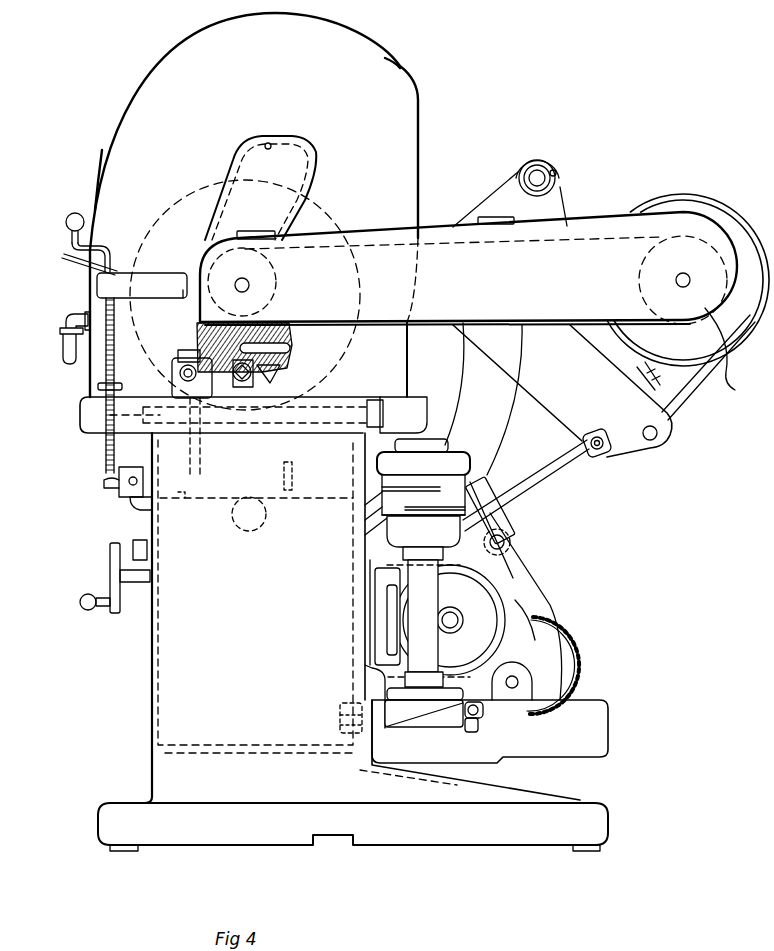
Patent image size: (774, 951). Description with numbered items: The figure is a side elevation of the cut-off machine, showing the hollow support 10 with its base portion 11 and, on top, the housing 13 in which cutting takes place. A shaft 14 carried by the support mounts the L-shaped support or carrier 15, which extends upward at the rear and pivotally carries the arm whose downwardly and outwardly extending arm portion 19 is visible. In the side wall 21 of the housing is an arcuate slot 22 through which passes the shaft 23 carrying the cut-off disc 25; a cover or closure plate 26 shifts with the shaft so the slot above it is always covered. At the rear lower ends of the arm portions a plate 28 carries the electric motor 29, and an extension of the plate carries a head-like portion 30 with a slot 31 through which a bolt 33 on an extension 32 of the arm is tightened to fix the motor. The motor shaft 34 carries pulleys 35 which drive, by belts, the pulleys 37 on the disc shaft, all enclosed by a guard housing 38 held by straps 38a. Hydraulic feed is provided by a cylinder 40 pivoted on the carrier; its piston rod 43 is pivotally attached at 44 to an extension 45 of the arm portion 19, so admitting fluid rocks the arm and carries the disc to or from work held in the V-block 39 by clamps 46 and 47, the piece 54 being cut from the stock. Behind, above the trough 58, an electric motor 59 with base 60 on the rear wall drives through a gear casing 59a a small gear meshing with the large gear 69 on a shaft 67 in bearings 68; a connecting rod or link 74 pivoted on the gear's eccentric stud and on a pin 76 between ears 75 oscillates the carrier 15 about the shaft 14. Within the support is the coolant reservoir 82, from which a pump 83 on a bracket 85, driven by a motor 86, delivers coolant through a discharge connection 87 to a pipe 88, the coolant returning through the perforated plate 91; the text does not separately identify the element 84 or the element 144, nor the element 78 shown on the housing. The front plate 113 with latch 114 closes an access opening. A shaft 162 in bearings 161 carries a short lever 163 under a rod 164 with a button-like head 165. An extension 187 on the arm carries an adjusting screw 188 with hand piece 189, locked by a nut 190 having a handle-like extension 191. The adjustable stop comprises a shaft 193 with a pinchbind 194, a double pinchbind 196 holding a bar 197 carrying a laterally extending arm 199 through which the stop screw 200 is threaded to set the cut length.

The hollow support 10 is at (124, 736).
The base portion 11 is at (415, 400).
The housing 13 is at (437, 97).
The shaft 14 is at (252, 530).
The support or carrier 15 is at (488, 418).
The arm portion 19 is at (608, 404).
The side wall 21 is at (392, 62).
The arcuate slot 22 is at (270, 143).
The shaft 23 is at (250, 286).
The cut-off disc 25 is at (172, 196).
The cover or closure plate 26 is at (313, 155).
The plate 28 is at (603, 348).
The electric motor 29 is at (690, 198).
The head-like portion 30 is at (555, 160).
The slot 31 is at (558, 172).
The extension 32 is at (478, 207).
The bolt 33 is at (534, 165).
The shaft 34 is at (692, 258).
The pulleys 35 is at (726, 350).
The pulleys 37 is at (272, 270).
The guard housing 38 is at (601, 214).
The straps 38a is at (248, 231).
The V-block 39 is at (262, 385).
The cylinder 40 is at (378, 552).
The piston rod 43 is at (553, 474).
The pivotal attachment 44 is at (606, 458).
The extension 45 is at (567, 428).
The clamp 46 is at (284, 470).
The clamp 47 is at (188, 492).
The piece 54 is at (245, 392).
The trough 58 is at (600, 742).
The electric motor 59 is at (495, 602).
The gear casing 59a is at (520, 620).
The base 60 is at (378, 610).
The shaft 67 is at (518, 682).
The bearings 68 is at (522, 692).
The gear 69 is at (562, 650).
The connecting rod or link 74 is at (522, 572).
The ears 75 is at (492, 528).
The pin 76 is at (504, 542).
The hood wall 78 is at (118, 122).
The column 82 is at (160, 662).
The pump 83 is at (442, 718).
The bracket 84 is at (340, 718).
The bracket 85 is at (372, 688).
The motor 86 is at (395, 520).
The discharge connection 87 is at (478, 722).
The pipe 88 is at (62, 350).
The perforated plate 91 is at (325, 505).
The plate 113 is at (150, 632).
The latch 114 is at (118, 542).
The handle 144 is at (112, 566).
The bearings 161 is at (128, 506).
The shaft 162 is at (120, 490).
The short lever 163 is at (118, 476).
The rod 164 is at (96, 386).
The button-like head 165 is at (180, 372).
The extension 187 is at (183, 296).
The screw 188 is at (114, 326).
The hand piece 189 is at (80, 212).
The nut 190 is at (142, 285).
The handle-like extension 191 is at (64, 260).
The shaft 193 is at (340, 420).
The pinchbind 194 is at (108, 425).
The double pinchbind 196 is at (178, 380).
The bar 197 is at (178, 360).
The arm 199 is at (215, 390).
The stop screw 200 is at (300, 375).